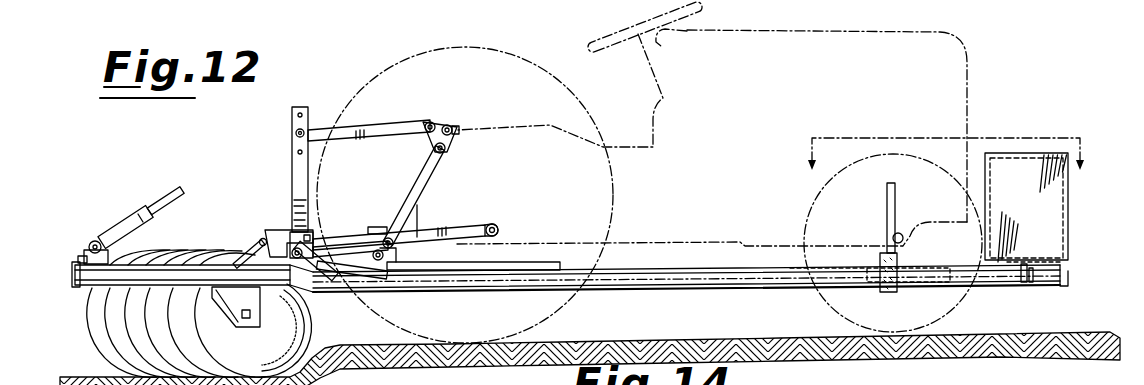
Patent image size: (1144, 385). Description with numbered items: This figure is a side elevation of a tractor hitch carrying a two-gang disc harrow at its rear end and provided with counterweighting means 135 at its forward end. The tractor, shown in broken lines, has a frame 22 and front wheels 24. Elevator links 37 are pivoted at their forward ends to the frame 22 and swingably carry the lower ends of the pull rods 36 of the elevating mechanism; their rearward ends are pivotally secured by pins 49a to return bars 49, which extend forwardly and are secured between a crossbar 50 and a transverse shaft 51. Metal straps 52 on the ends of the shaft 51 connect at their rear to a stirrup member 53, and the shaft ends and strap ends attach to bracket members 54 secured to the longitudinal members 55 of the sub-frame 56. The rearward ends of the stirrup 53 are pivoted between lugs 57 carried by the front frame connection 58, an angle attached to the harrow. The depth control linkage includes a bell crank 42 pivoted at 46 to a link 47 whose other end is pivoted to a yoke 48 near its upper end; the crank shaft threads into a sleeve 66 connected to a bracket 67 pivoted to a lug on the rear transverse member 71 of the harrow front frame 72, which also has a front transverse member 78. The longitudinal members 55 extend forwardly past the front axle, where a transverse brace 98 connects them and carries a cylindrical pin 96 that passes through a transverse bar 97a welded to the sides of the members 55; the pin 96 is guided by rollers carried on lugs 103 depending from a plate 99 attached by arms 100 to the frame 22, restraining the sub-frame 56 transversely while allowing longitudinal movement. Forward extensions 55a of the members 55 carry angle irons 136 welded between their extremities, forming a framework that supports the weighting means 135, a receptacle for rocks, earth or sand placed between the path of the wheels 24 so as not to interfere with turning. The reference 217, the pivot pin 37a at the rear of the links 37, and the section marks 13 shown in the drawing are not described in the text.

The tractor 217 is at (909, 23).
The section line 13- 13 is at (947, 235).
The counterweighting means 135 is at (1050, 206).
The arms 100 is at (887, 206).
The depending lugs 103 is at (880, 253).
The plate 99 is at (897, 250).
The cylindrical pin 96 is at (939, 236).
The transverse bar 97a is at (861, 288).
The front wheels 24 is at (952, 322).
The angle irons 136 is at (1026, 284).
The forward extensions 55a is at (1043, 284).
The transverse brace 98 is at (787, 293).
The sub-frame 56 is at (700, 290).
The longitudinal members 55 is at (647, 281).
The frame 22 is at (690, 211).
The bracket members 54 is at (447, 268).
The transverse shaft 51 is at (392, 250).
The metal straps 52 is at (347, 280).
The stirrup member 53 is at (293, 262).
The pins 49a is at (262, 296).
The rear transverse member 71 is at (90, 285).
The bracket 67 is at (90, 257).
The sleeve 66 is at (133, 226).
The front frame 72 is at (204, 260).
The front transverse member 78 is at (259, 240).
The front frame connection 58 is at (265, 230).
The yoke 48 is at (289, 172).
The lugs 57 is at (307, 213).
The return bars 49 is at (337, 235).
The crossbar 50 is at (380, 227).
The elevator links 37 is at (458, 236).
The pivot pin 37a is at (495, 225).
The pull rods 36 is at (438, 168).
The bell crank 42 is at (452, 137).
The pivot 46 is at (432, 123).
The link 47 is at (411, 108).